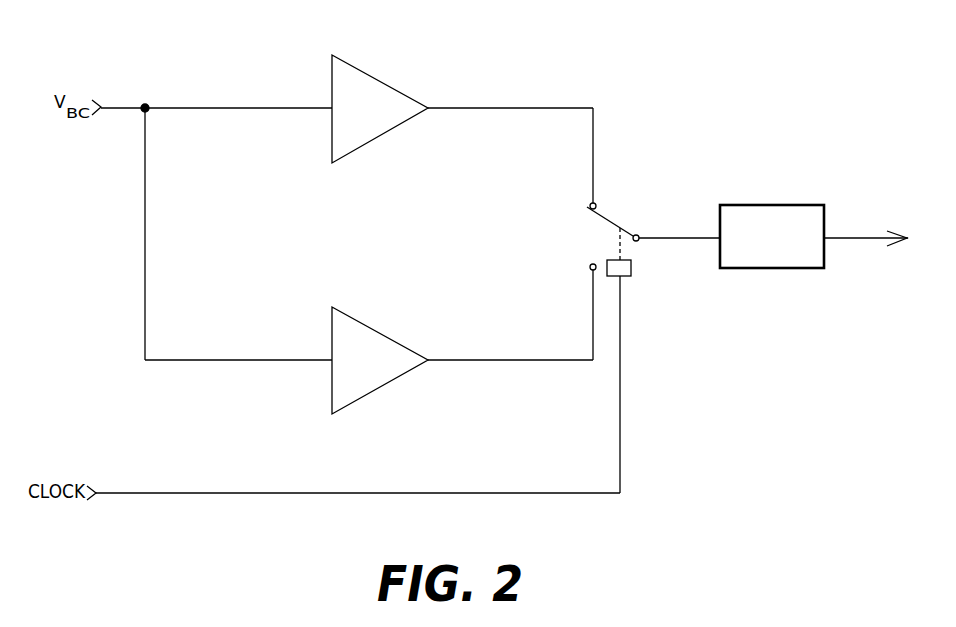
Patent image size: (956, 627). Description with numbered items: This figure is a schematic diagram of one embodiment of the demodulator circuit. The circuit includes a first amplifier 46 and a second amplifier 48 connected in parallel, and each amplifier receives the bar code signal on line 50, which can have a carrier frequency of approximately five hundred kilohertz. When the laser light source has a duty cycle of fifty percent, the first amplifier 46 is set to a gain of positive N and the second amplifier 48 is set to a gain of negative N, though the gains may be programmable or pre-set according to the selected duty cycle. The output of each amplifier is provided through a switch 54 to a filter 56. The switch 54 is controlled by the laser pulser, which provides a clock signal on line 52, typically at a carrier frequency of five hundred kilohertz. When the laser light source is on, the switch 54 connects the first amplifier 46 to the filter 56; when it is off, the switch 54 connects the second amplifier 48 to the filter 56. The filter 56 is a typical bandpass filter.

The line 50 is at (124, 105).
The first amplifier 46 is at (386, 86).
The second amplifier 48 is at (393, 339).
The switch 54 is at (612, 222).
The line 52 is at (224, 495).
The filter 56 is at (789, 205).